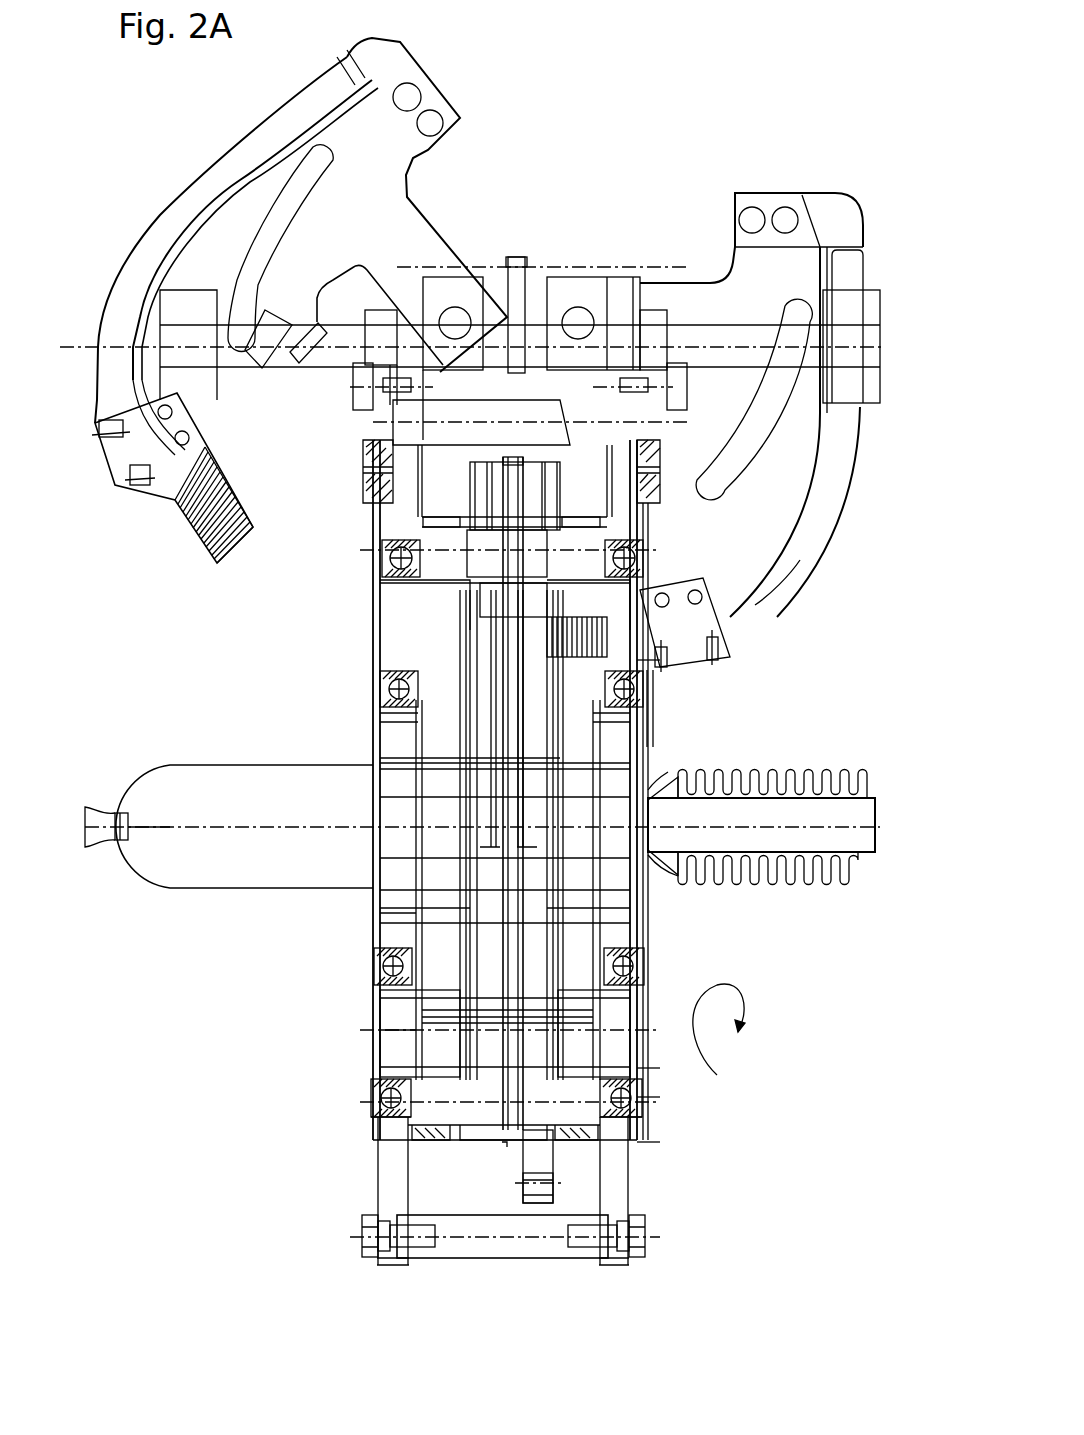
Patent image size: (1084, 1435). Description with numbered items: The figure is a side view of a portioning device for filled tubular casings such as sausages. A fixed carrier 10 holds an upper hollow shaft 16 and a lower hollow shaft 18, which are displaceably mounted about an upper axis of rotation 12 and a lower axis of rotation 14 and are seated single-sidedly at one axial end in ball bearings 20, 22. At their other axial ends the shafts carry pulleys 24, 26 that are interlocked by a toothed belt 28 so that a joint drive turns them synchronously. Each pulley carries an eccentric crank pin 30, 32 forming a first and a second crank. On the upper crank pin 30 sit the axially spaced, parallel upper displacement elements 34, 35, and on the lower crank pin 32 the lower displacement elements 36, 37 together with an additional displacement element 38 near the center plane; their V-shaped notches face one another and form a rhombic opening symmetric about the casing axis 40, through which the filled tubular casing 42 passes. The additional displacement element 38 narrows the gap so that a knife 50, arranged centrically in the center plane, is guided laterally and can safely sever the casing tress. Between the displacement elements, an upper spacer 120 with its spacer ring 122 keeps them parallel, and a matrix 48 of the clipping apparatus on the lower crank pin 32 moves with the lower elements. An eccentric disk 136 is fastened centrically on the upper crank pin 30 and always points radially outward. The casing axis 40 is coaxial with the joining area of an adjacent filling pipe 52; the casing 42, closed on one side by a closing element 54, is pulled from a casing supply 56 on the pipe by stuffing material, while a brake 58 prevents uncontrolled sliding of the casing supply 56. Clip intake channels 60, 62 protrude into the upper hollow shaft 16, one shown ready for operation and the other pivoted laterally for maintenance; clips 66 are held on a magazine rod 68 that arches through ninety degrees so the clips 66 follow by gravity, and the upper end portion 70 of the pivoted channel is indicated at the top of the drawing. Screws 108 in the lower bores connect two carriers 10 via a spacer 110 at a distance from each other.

The carrier 10 is at (640, 1173).
The upper axis of rotation 12 is at (432, 625).
The lower axis of rotation 14 is at (400, 1030).
The upper hollow shaft 16 is at (660, 683).
The lower hollow shaft 18 is at (640, 1068).
The ball bearing 20 is at (653, 705).
The ball bearing 22 is at (640, 1097).
The pulley 24 is at (653, 750).
The pulley 26 is at (640, 1142).
The toothed belt 28 is at (640, 923).
The upper crank pin 30 is at (470, 585).
The lower crank pin 32 is at (400, 1137).
The upper displacement element 34 is at (552, 700).
The upper displacement element 35 is at (600, 715).
The lower displacement element 36 is at (377, 910).
The lower displacement element 37 is at (400, 940).
The additional displacement element 38 is at (470, 1000).
The casing axis 40 is at (227, 827).
The tubular casing 42 is at (165, 770).
The matrix 48 is at (640, 1010).
The knife 50 is at (375, 1030).
The filling pipe 52 is at (830, 848).
The closing element 54 is at (127, 843).
The casing supply 56 is at (840, 880).
The brake 58 is at (668, 862).
The clip intake channel 60 is at (862, 557).
The clip intake channel 62 is at (178, 135).
The clips 66 is at (660, 656).
The magazine rod 68 is at (838, 523).
The lever head 70 is at (900, 268).
The screws 108 is at (380, 1237).
The spacer 110 is at (480, 1258).
The upper spacer 120 is at (533, 507).
The spacer ring 122 is at (532, 1160).
The eccentric disk 136 is at (525, 520).